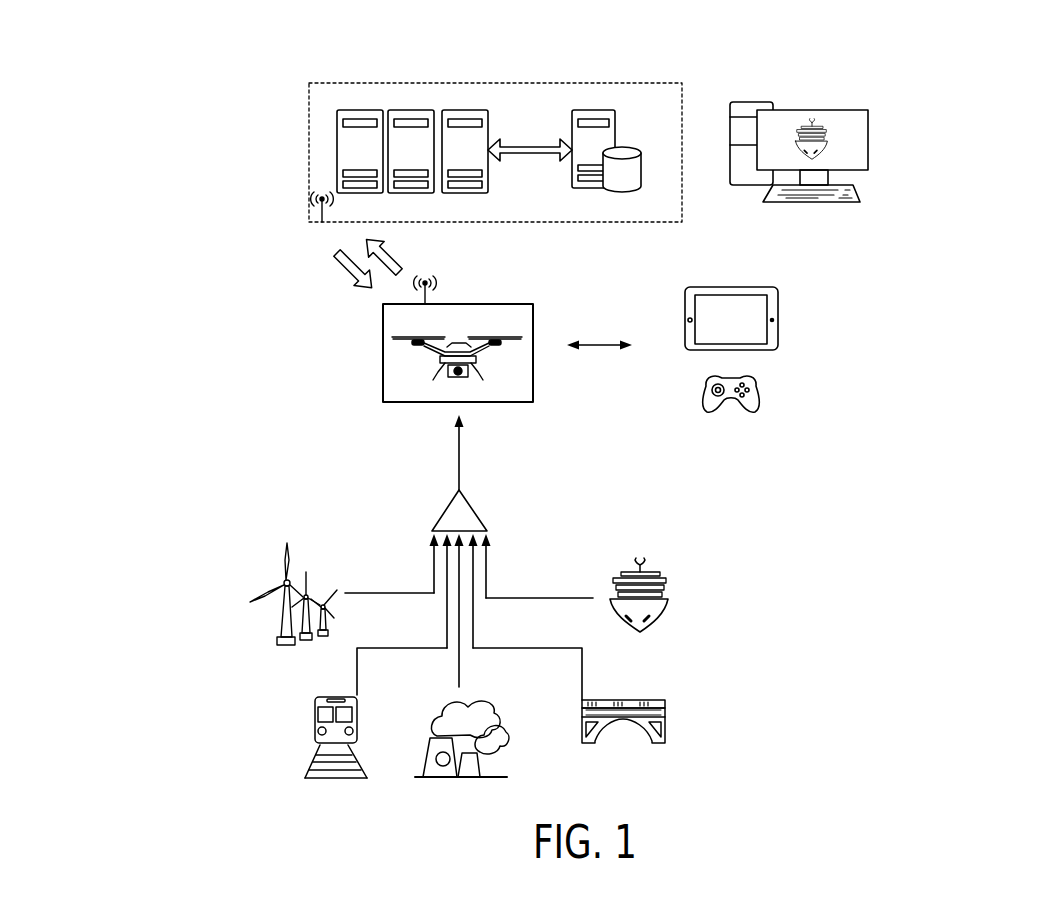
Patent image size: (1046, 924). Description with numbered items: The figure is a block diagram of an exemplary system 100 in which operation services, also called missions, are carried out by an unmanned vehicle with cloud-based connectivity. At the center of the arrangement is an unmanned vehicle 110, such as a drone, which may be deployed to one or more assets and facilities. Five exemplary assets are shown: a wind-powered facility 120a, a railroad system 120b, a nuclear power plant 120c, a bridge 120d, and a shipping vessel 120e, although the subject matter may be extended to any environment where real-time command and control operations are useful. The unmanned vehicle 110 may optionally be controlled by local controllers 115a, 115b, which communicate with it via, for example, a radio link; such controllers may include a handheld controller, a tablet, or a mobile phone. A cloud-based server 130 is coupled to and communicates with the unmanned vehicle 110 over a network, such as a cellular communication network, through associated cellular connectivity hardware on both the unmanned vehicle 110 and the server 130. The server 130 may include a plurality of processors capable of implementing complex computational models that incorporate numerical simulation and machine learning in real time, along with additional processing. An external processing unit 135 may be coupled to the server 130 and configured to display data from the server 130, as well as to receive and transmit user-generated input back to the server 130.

The system 100 is at (72, 122).
The unmanned vehicle 110 is at (470, 304).
The local controller 115a is at (745, 299).
The local controller 115b is at (760, 397).
The wind-powered facility 120a is at (245, 573).
The railroad system 120b is at (294, 717).
The nuclear power plant 120c is at (455, 797).
The bridge 120d is at (684, 719).
The shipping vessel 120e is at (684, 583).
The cloud-based server 130 is at (652, 129).
The external processing unit 135 is at (886, 126).